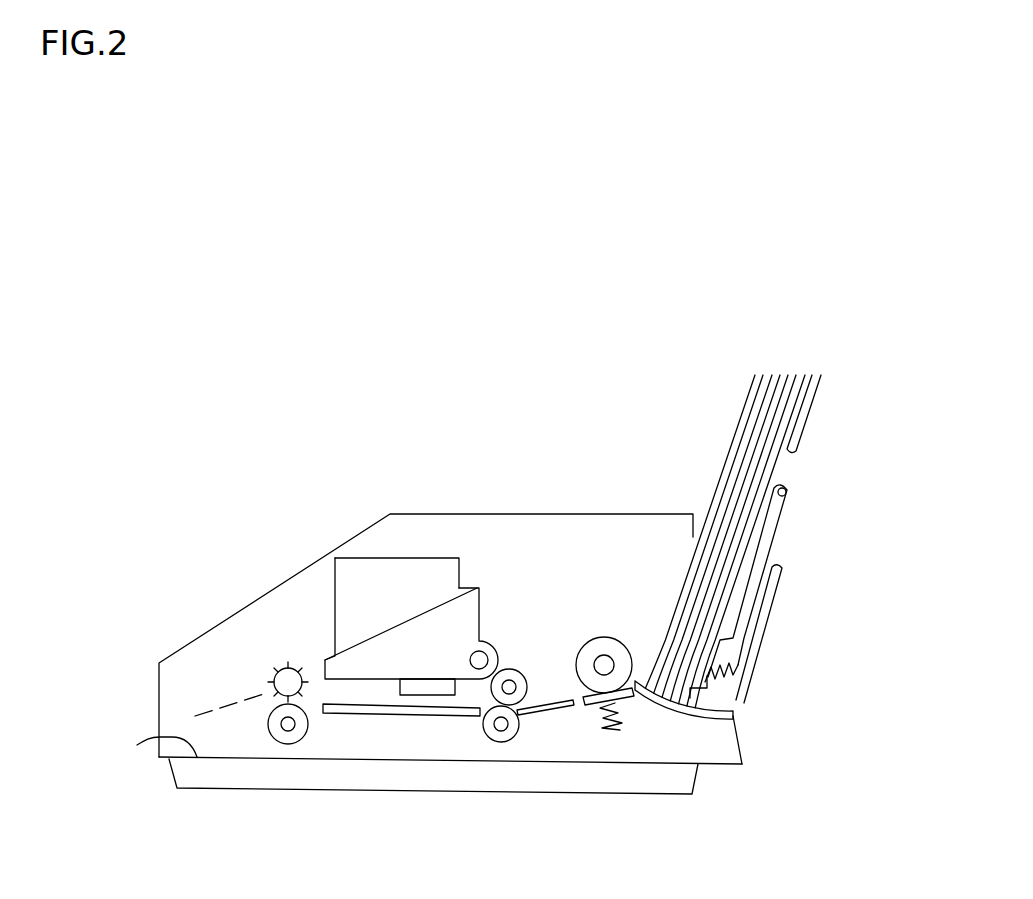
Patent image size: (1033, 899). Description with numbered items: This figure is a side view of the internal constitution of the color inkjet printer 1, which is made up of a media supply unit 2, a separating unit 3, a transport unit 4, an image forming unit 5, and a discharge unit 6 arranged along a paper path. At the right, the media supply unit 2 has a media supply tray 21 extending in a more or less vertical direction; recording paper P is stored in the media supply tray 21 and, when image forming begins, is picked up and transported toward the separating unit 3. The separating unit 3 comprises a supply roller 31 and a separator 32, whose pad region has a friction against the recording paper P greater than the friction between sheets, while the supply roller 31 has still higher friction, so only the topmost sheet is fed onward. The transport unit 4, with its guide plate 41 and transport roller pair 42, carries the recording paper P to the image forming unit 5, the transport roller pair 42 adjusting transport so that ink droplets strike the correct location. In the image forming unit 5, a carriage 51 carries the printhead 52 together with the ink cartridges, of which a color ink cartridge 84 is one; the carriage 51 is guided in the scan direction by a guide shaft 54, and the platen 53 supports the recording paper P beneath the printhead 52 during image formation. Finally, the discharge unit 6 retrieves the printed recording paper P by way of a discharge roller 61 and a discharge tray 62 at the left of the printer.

The color inkjet printer 1 is at (128, 328).
The media supply unit 2 is at (762, 694).
The media supply tray 21 is at (773, 593).
The recording paper P is at (742, 400).
The separating unit 3 is at (612, 738).
The supply roller 31 is at (610, 637).
The separator 32 is at (632, 702).
The transport unit 4 is at (525, 655).
The guide plate 41 is at (547, 710).
The transport roller pair 42 is at (501, 743).
The image forming unit 5 is at (431, 541).
The carriage 51 is at (407, 640).
The printhead 52 is at (443, 688).
The platen 53 is at (412, 717).
The guide shaft 54 is at (483, 641).
The discharge unit 6 is at (265, 668).
The discharge roller 61 is at (275, 744).
The discharge tray 62 is at (137, 745).
The ink cartridge 84 is at (370, 580).